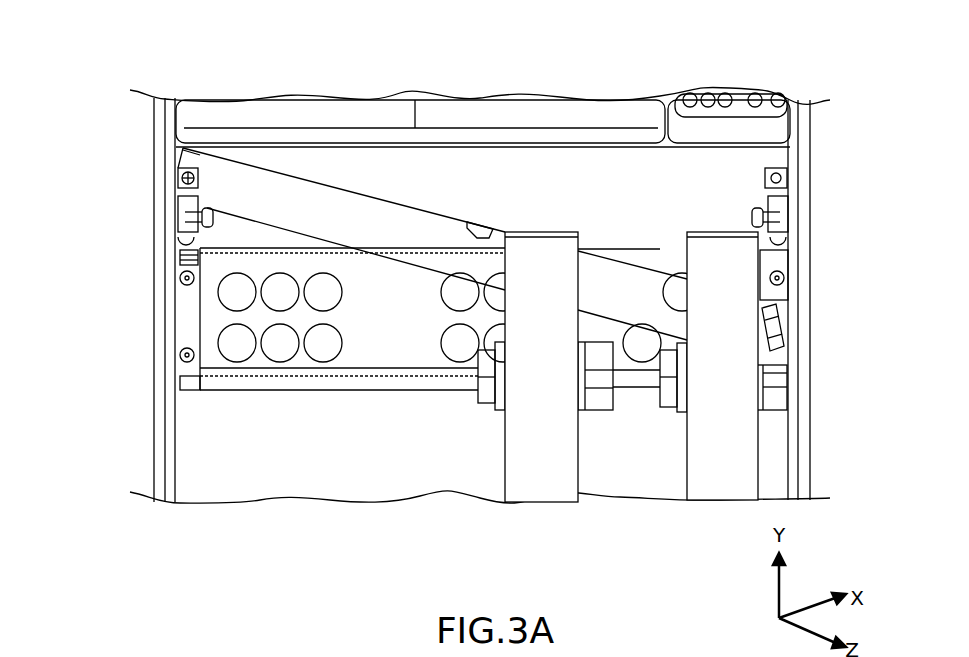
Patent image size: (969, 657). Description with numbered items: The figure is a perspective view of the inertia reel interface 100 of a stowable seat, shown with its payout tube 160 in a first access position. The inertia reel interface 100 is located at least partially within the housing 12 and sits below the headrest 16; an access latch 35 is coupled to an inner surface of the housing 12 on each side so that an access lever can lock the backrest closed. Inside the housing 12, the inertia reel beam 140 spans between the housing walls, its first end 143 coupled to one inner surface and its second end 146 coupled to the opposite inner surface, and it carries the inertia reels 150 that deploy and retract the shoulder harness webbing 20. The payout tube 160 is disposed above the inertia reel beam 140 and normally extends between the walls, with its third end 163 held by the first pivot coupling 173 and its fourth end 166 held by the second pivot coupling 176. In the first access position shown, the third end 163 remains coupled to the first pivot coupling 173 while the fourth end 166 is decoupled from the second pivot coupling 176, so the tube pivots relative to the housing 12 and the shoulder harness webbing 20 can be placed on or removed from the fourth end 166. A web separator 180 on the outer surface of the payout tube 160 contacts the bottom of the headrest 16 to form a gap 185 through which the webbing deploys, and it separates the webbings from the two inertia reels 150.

The inertia reel interface 100 is at (115, 74).
The housing 12 is at (165, 275).
The headrest 16 is at (555, 110).
The shoulder harness webbing 20 is at (523, 490).
The access latch 35 is at (182, 216).
The inertia reel beam 140 is at (341, 368).
The first end 143 is at (186, 320).
The second end 146 is at (780, 300).
The inertia reel 150 is at (487, 398).
The payout tube 160 is at (335, 202).
The third end 163 is at (208, 166).
The fourth end 166 is at (773, 330).
The first pivot coupling 173 is at (178, 176).
The second pivot coupling 176 is at (782, 185).
The web separator 180 is at (490, 226).
The gap 185 is at (463, 178).